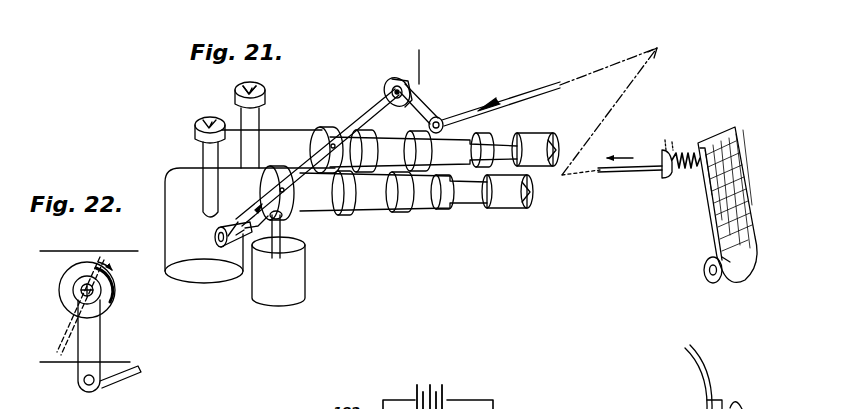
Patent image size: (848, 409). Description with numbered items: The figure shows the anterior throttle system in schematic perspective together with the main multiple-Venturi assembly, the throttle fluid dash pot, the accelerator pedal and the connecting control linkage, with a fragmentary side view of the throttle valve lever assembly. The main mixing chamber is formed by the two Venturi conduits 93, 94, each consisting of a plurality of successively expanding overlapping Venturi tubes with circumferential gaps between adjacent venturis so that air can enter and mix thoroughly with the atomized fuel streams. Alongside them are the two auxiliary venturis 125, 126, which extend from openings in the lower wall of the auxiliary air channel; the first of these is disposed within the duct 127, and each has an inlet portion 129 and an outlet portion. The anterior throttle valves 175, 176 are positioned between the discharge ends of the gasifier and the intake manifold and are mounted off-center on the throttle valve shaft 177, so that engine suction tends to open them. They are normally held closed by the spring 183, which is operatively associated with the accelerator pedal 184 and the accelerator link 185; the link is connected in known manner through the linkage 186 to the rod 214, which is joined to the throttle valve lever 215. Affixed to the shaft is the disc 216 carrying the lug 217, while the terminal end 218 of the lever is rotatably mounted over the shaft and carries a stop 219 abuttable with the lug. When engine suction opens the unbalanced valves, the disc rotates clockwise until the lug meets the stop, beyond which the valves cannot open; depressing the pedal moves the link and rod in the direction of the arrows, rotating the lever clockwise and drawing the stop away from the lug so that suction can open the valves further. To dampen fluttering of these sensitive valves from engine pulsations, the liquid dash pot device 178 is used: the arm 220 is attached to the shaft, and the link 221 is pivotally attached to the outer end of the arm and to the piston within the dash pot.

In FIG. 21, the Venturi conduit 93 is at (450, 141).
In FIG. 21, the Venturi conduit 94 is at (425, 212).
In FIG. 21, the auxiliary venturi 125 is at (201, 143).
In FIG. 21, the auxiliary venturi 126 is at (236, 101).
In FIG. 21, the inlet portion 129 is at (262, 97).
In FIG. 21, the duct 127 is at (250, 225).
In FIG. 21, the anterior throttle valve 175 is at (322, 135).
In FIG. 21, the anterior throttle valve 176 is at (277, 170).
In FIG. 21, the throttle valve shaft 177 is at (349, 112).
In FIG. 22, the throttle valve shaft 177 is at (72, 282).
In FIG. 21, the liquid dash pot device 178 is at (297, 278).
In FIG. 21, the spring 183 is at (684, 152).
In FIG. 21, the accelerator pedal 184 is at (741, 135).
In FIG. 21, the accelerator link 185 is at (640, 162).
In FIG. 21, the linkage 186 is at (583, 70).
In FIG. 21, the rod 214 is at (471, 101).
In FIG. 22, the rod 214 is at (120, 375).
In FIG. 21, the throttle valve lever 215 is at (426, 108).
In FIG. 22, the throttle valve lever 215 is at (94, 345).
In FIG. 21, the disc 216 is at (405, 105).
In FIG. 22, the disc 216 is at (68, 302).
In FIG. 21, the lug 217 is at (401, 78).
In FIG. 22, the lug 217 is at (92, 262).
In FIG. 21, the terminal end 218 is at (421, 60).
In FIG. 22, the terminal end 218 is at (72, 291).
In FIG. 22, the stop 219 is at (112, 289).
In FIG. 21, the arm 220 is at (243, 240).
In FIG. 21, the link 221 is at (290, 226).